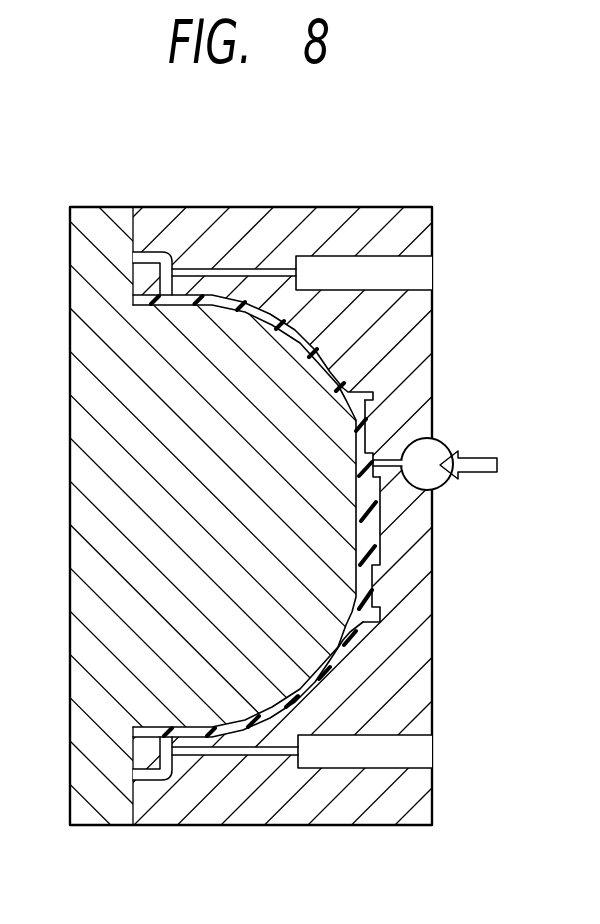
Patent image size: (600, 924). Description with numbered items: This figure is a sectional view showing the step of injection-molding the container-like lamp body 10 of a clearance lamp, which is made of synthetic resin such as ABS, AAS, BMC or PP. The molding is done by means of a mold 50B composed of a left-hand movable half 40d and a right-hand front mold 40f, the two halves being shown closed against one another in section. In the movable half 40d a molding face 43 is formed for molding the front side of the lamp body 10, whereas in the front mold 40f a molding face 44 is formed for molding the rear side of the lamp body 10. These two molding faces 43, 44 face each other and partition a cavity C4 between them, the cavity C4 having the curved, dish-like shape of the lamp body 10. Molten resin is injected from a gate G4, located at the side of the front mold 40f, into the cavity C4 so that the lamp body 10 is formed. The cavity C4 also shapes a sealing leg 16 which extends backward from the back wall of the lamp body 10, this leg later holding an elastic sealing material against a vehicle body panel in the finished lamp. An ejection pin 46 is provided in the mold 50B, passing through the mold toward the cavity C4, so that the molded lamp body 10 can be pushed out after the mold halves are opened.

The mold 50B is at (293, 141).
The movable half 40d is at (97, 206).
The second mold member 40f is at (243, 206).
The ejection pin 46 is at (284, 272).
The lamp body 10 is at (302, 313).
The molding face 44 is at (335, 354).
The gate G4 is at (392, 460).
The molding face 43 is at (340, 445).
The sealing leg 16 is at (380, 617).
The cavity C4 is at (300, 681).